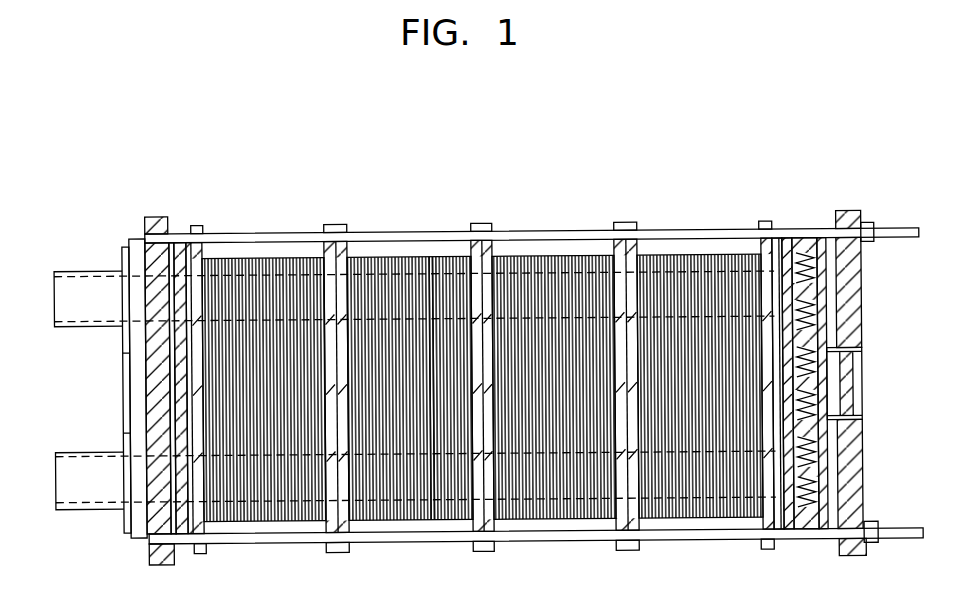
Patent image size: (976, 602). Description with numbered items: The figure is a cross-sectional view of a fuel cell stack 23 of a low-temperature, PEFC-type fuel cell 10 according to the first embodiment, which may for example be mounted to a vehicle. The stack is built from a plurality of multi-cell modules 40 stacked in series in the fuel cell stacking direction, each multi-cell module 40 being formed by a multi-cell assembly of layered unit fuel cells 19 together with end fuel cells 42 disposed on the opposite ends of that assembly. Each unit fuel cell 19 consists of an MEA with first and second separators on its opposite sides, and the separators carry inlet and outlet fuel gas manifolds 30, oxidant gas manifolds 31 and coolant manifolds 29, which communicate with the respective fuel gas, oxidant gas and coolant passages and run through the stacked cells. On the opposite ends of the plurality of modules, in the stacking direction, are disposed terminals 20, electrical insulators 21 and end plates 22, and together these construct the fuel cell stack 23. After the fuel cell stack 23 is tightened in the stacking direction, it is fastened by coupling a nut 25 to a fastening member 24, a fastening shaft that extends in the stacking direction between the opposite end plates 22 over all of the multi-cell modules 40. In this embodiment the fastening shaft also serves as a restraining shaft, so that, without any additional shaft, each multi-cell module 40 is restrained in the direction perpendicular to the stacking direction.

The fuel cell 10 is at (693, 231).
The unit fuel cell 19 is at (432, 261).
The terminal 20 is at (184, 269).
The electrical insulator 21 is at (177, 269).
The end plate 22 is at (147, 226).
The fuel cell stack 23 is at (562, 255).
The fastening member 24 is at (266, 235).
The nut 25 is at (871, 245).
The coolant manifold 29 is at (414, 274).
The fuel gas manifold 30 is at (389, 255).
The oxidant gas manifold 31 is at (414, 319).
The multi-cell module 40 is at (262, 520).
The end fuel cell 42 is at (200, 224).